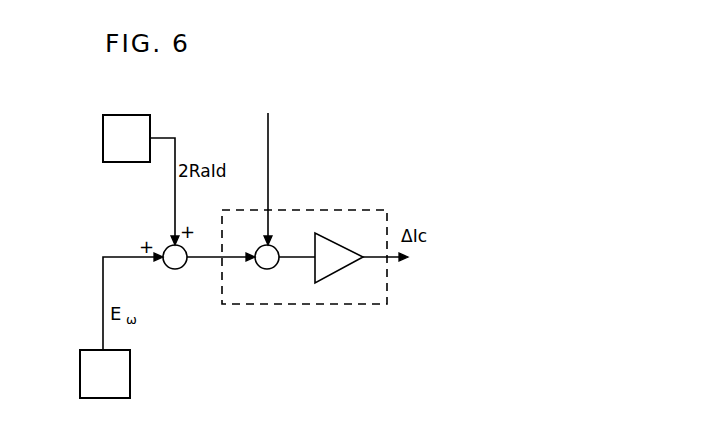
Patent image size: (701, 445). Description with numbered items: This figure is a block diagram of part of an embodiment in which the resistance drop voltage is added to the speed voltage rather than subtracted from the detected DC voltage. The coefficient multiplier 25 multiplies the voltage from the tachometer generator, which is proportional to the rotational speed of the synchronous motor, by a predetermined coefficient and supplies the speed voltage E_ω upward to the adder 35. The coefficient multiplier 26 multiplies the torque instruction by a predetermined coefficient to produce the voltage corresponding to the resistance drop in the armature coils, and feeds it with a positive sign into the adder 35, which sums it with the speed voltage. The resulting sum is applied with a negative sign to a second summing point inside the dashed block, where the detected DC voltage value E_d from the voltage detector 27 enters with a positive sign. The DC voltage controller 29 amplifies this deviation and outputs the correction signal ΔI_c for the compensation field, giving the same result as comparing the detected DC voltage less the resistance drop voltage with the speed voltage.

The coefficient multiplier 25 is at (130, 364).
The coefficient multiplier 26 is at (118, 162).
The voltage detector 27 is at (333, 178).
The DC voltage controller 29 is at (312, 305).
The adder 35 is at (175, 269).